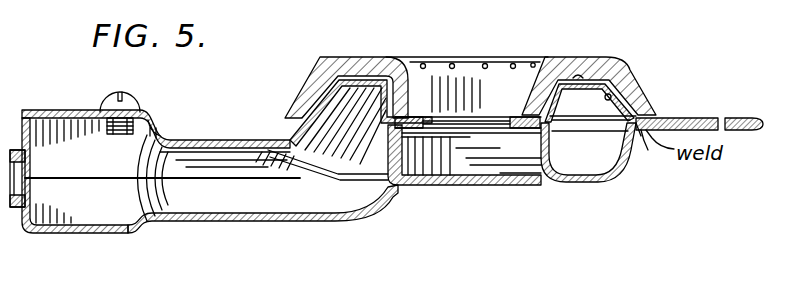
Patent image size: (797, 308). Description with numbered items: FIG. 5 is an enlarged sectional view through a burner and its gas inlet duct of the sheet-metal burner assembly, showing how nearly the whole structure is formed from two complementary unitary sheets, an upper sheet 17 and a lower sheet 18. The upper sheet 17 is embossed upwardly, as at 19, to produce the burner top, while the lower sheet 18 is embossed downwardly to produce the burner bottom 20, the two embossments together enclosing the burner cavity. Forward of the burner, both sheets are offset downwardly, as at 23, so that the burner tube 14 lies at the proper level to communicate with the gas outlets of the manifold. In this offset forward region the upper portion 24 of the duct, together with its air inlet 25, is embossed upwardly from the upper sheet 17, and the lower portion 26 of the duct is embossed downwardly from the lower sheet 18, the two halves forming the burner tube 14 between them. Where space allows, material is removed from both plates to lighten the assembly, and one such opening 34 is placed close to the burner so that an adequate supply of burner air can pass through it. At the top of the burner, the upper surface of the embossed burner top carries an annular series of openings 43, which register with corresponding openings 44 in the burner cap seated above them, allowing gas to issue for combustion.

The burner tube 14 is at (190, 200).
The upper sheet 17 is at (697, 118).
The lower sheet 18 is at (641, 136).
The upward embossment 19 is at (317, 98).
The burner bottom 20 is at (586, 186).
The downward offset 23 is at (314, 173).
The upper portion of the duct 24 is at (213, 140).
The air inlet 25 is at (42, 114).
The lower portion of the duct 26 is at (198, 222).
The opening 34 is at (437, 128).
The burner top opening 43 is at (588, 96).
The burner cap opening 44 is at (318, 57).